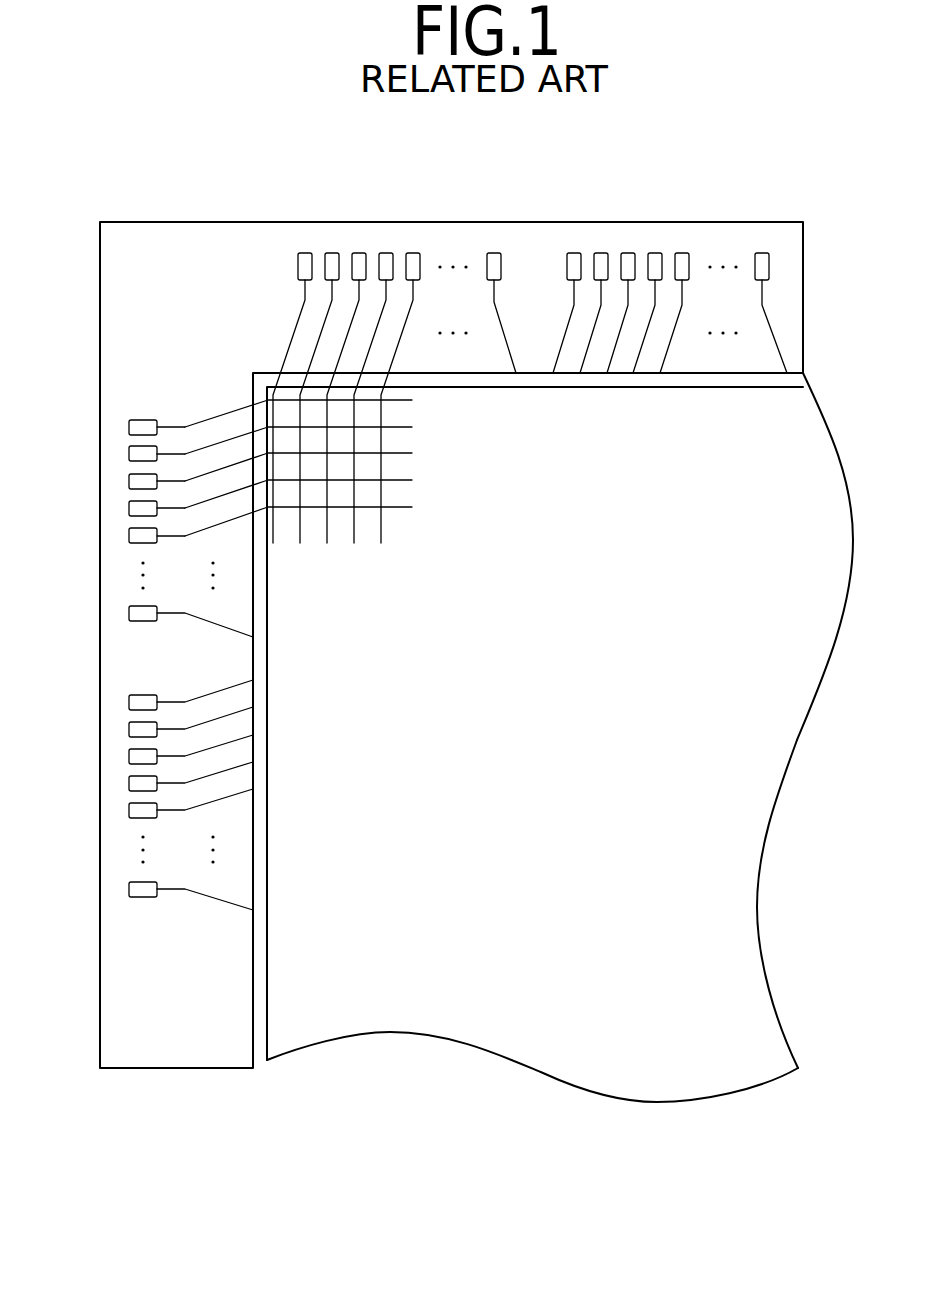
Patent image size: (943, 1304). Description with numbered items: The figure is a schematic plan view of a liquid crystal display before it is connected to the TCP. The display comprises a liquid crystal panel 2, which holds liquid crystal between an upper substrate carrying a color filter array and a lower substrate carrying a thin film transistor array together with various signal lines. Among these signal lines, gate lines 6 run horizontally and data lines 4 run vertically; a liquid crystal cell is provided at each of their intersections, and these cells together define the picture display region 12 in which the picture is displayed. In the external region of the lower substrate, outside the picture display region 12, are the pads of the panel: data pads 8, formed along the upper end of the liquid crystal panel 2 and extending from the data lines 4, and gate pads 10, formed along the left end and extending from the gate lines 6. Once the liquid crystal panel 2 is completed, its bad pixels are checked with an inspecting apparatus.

The liquid crystal panel 2 is at (799, 737).
The data lines 4 is at (327, 543).
The gate lines 6 is at (412, 507).
The data pads 8 is at (305, 253).
The gate pads 10 is at (129, 455).
The picture display region 12 is at (540, 1055).